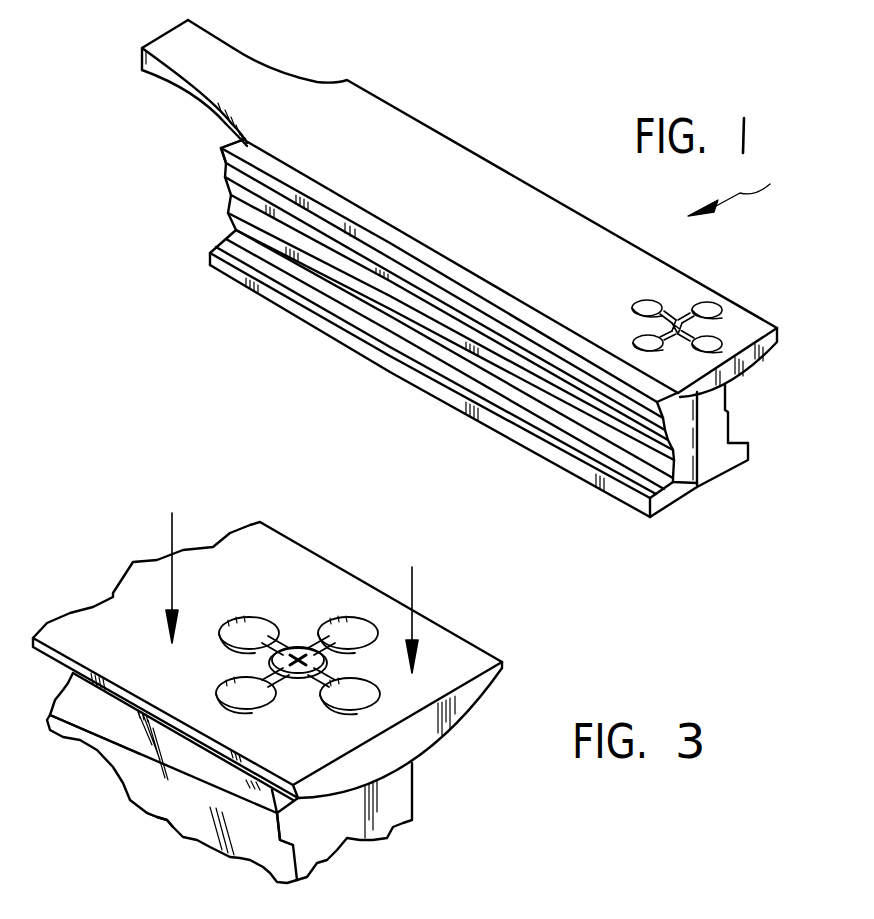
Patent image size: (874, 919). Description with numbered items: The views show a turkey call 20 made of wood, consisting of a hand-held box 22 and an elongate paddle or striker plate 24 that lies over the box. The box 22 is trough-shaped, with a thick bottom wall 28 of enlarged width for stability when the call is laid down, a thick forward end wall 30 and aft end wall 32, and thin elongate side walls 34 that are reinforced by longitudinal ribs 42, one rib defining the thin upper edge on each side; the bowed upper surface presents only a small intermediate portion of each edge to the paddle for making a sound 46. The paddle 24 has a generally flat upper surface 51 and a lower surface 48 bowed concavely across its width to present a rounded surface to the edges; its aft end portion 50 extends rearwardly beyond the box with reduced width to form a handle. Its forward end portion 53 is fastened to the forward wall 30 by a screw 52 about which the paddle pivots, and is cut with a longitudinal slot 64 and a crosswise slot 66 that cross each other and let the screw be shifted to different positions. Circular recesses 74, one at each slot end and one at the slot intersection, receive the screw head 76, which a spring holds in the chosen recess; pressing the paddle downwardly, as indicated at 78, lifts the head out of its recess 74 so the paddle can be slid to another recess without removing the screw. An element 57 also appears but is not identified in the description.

In FIG. 1, the turkey call 20 is at (752, 189).
In FIG. 1, the box 22 is at (495, 349).
In FIG. 3, the box 22 is at (258, 794).
In FIG. 1, the paddle 24 is at (486, 208).
In FIG. 3, the paddle 24 is at (279, 642).
In FIG. 1, the bottom wall 28 is at (662, 507).
In FIG. 1, the forward end wall 30 is at (707, 455).
In FIG. 3, the forward end wall 30 is at (403, 785).
In FIG. 1, the aft end wall 32 is at (225, 143).
In FIG. 1, the side wall 34 is at (420, 312).
In FIG. 3, the side wall 34 is at (92, 718).
In FIG. 1, the longitudinal rib 42 is at (618, 510).
In FIG. 3, the sound 46 is at (247, 863).
In FIG. 1, the lower surface of the paddle 48 is at (772, 355).
In FIG. 1, the aft end portion 50 is at (247, 65).
In FIG. 1, the paddle upper surface 51 is at (437, 163).
In FIG. 1, the screw 52 is at (728, 320).
In FIG. 1, the forward end portion 53 is at (685, 283).
In FIG. 3, the forward end portion 53 is at (281, 553).
In FIG. 3, the fastener 57 is at (647, 911).
In FIG. 3, the longitudinal slot 64 is at (278, 628).
In FIG. 3, the crosswise slot 66 is at (173, 825).
In FIG. 3, the circular recess 74 is at (443, 697).
In FIG. 3, the screw head 76 is at (297, 668).
In FIG. 3, the downward push 78 is at (413, 590).